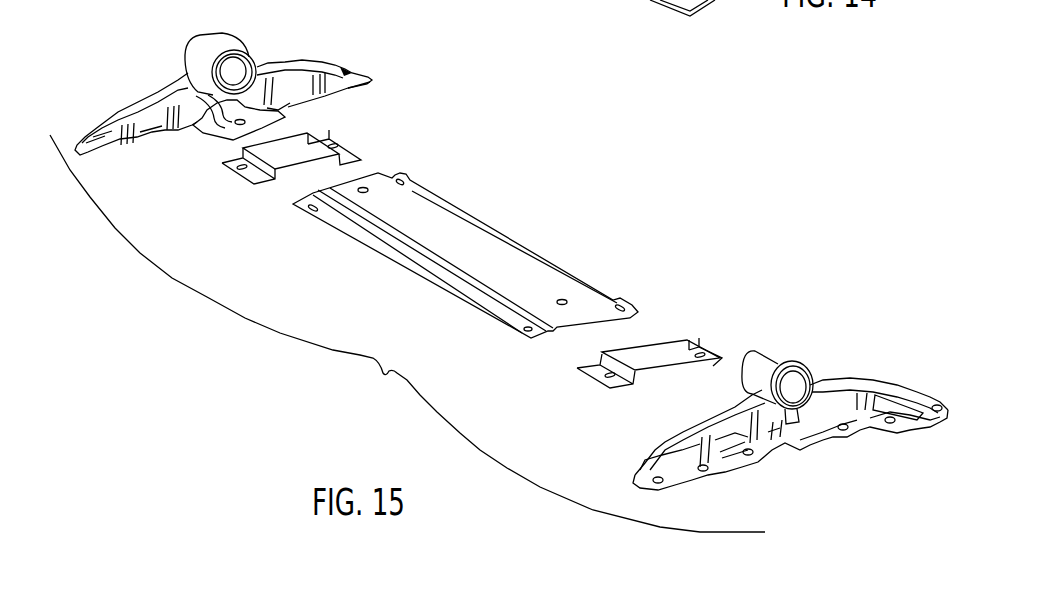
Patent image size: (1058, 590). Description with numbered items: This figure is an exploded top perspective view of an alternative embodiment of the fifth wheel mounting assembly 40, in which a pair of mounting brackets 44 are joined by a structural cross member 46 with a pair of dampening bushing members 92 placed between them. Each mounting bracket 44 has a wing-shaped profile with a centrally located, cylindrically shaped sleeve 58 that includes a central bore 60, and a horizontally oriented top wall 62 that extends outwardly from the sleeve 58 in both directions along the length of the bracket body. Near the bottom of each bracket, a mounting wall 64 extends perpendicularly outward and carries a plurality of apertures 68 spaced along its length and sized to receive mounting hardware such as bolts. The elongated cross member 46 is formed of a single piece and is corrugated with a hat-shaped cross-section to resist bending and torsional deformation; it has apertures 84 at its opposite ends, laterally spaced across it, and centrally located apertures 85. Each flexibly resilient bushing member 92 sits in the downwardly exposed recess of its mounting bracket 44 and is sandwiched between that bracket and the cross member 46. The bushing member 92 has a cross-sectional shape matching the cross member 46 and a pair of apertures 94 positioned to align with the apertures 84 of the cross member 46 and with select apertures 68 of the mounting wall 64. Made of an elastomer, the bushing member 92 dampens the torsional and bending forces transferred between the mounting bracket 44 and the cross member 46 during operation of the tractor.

The fifth wheel mounting assembly 40 is at (407, 333).
The mounting bracket 44 is at (511, 250).
The cross member 46 is at (513, 222).
The sleeve 58 is at (213, 35).
The bore 60 is at (798, 387).
The top wall 62 is at (708, 422).
The mounting wall 64 is at (673, 475).
The apertures 68 is at (640, 477).
The apertures 84 is at (405, 180).
The apertures 85 is at (366, 184).
The bushing member 92 is at (308, 135).
The apertures 94 is at (233, 156).